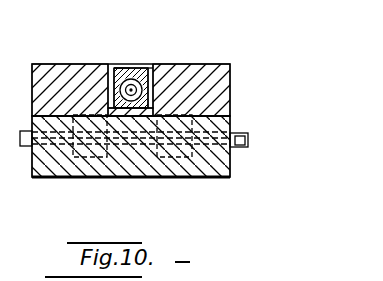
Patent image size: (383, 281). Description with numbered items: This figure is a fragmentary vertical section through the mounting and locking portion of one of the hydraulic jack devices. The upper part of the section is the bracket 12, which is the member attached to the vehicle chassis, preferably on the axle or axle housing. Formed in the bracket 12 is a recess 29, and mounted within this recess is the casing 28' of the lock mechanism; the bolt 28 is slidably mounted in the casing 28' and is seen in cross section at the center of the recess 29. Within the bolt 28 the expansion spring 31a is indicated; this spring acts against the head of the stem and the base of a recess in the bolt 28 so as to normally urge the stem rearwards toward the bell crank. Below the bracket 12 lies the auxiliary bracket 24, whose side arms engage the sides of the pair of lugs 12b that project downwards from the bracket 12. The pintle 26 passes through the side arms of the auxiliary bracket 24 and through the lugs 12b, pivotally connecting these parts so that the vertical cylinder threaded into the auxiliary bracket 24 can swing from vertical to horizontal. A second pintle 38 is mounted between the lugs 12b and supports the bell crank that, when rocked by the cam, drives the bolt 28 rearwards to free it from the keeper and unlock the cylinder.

The bracket 12 is at (217, 72).
The lugs 12b is at (103, 178).
The auxiliary bracket 24 is at (228, 167).
The pintle 26 is at (235, 133).
The bolt 28 is at (137, 67).
The casing 28' is at (116, 49).
The recess 29 is at (112, 64).
The expansion spring 31a is at (150, 68).
The pintle 38 is at (200, 178).